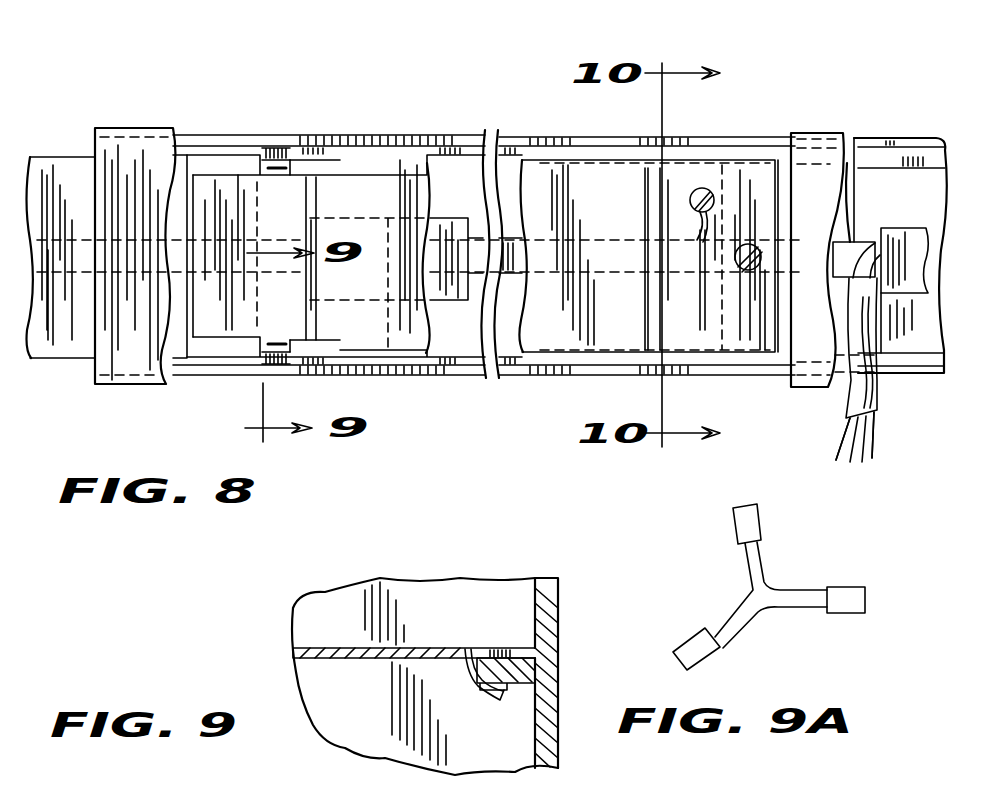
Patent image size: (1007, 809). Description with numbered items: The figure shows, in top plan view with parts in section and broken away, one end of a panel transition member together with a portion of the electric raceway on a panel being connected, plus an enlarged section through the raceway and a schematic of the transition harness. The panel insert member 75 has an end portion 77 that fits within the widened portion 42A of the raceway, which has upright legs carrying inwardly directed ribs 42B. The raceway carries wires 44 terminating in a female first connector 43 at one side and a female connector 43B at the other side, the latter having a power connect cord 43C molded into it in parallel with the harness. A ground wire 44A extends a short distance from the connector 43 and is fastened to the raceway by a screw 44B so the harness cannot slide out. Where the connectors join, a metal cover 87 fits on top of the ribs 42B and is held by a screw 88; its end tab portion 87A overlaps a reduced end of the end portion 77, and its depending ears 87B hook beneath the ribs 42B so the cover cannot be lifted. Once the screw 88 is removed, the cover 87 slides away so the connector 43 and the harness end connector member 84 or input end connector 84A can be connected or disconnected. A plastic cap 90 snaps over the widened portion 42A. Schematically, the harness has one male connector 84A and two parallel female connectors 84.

In FIG. 8, the panel insert end member 75 is at (52, 172).
In FIG. 8, the plastic cap 90 is at (127, 150).
In FIG. 8, the end portion 77 is at (190, 163).
In FIG. 8, the end tab portion 87A is at (235, 332).
In FIG. 8, the depending ears 87B is at (283, 148).
In FIG. 9, the depending ears 87B is at (467, 699).
In FIG. 8, the metal cover 87 is at (350, 172).
In FIG. 9, the metal cover 87 is at (340, 645).
In FIG. 8, the input end connector 84A is at (360, 218).
In FIG. 9A, the input end connector 84A is at (876, 564).
In FIG. 8, the first connector 43 is at (455, 300).
In FIG. 8, the widened portion 42A is at (597, 378).
In FIG. 9, the widened portion 42A is at (565, 605).
In FIG. 8, the screw 44B is at (702, 185).
In FIG. 8, the ground wire 44A is at (718, 213).
In FIG. 8, the screw 88 is at (715, 300).
In FIG. 8, the wires 44 is at (825, 258).
In FIG. 8, the female connector 43B is at (880, 228).
In FIG. 8, the power connect cord 43C is at (874, 406).
In FIG. 9, the inwardly directed ribs 42B is at (520, 688).
In FIG. 9A, the end connector member 84 is at (757, 527).